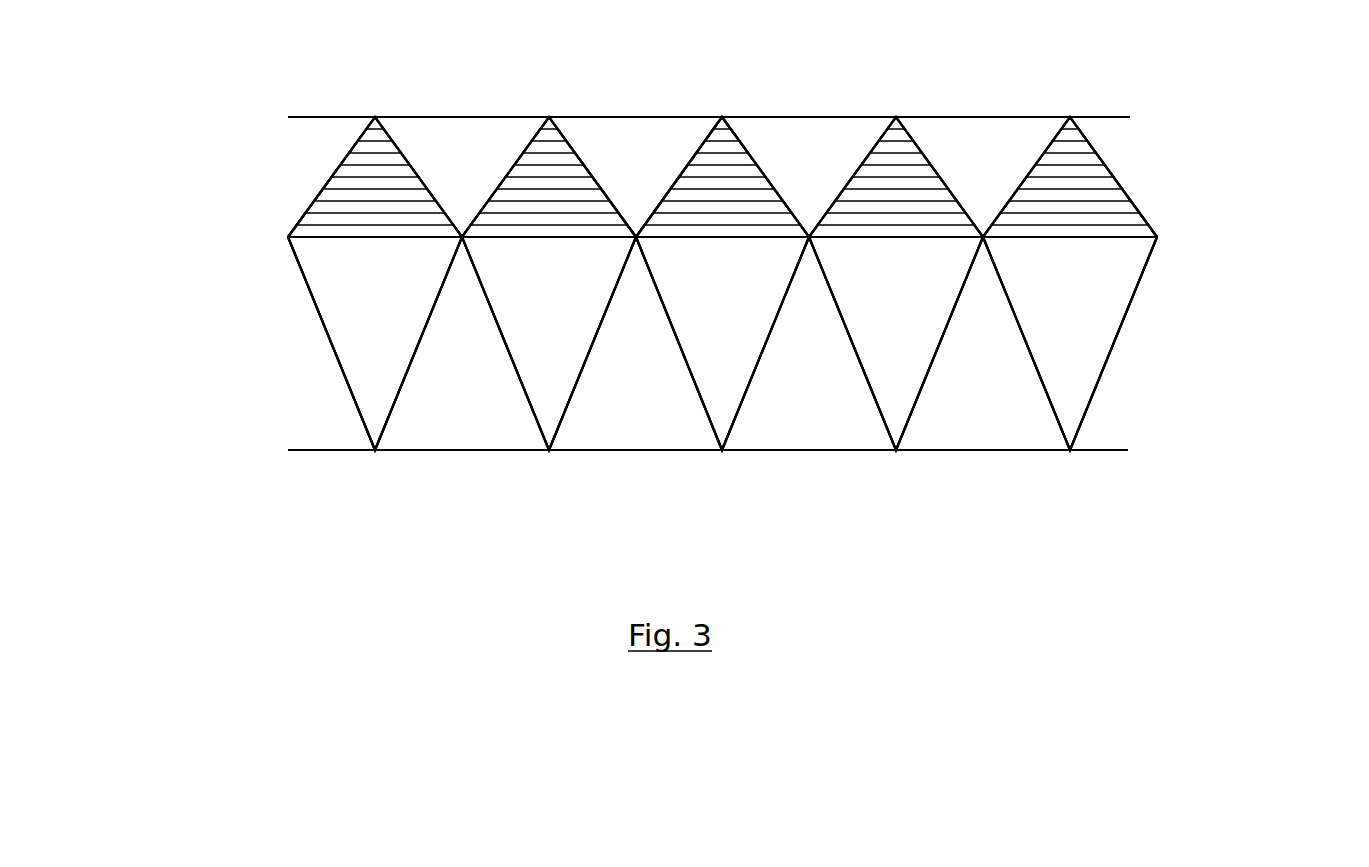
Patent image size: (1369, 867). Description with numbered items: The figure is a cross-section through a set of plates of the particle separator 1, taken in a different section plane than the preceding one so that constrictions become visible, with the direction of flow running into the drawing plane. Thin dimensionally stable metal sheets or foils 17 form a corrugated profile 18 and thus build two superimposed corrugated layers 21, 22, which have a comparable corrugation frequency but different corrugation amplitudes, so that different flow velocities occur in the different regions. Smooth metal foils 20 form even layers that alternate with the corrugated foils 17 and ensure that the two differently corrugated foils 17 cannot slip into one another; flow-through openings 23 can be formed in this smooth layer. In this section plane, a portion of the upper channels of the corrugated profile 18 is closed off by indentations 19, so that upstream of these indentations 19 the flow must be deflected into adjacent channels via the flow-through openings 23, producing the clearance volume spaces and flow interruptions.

The particle separator 1 is at (1273, 262).
The metal sheets or foils 17 is at (420, 181).
The corrugated profile 18 is at (1135, 146).
The indentations 19 is at (550, 178).
The smooth metal sheet or foil 20 is at (995, 116).
The corrugated layer 21 is at (233, 193).
The corrugated layer 22 is at (257, 350).
The flow-through openings 23 is at (1070, 240).